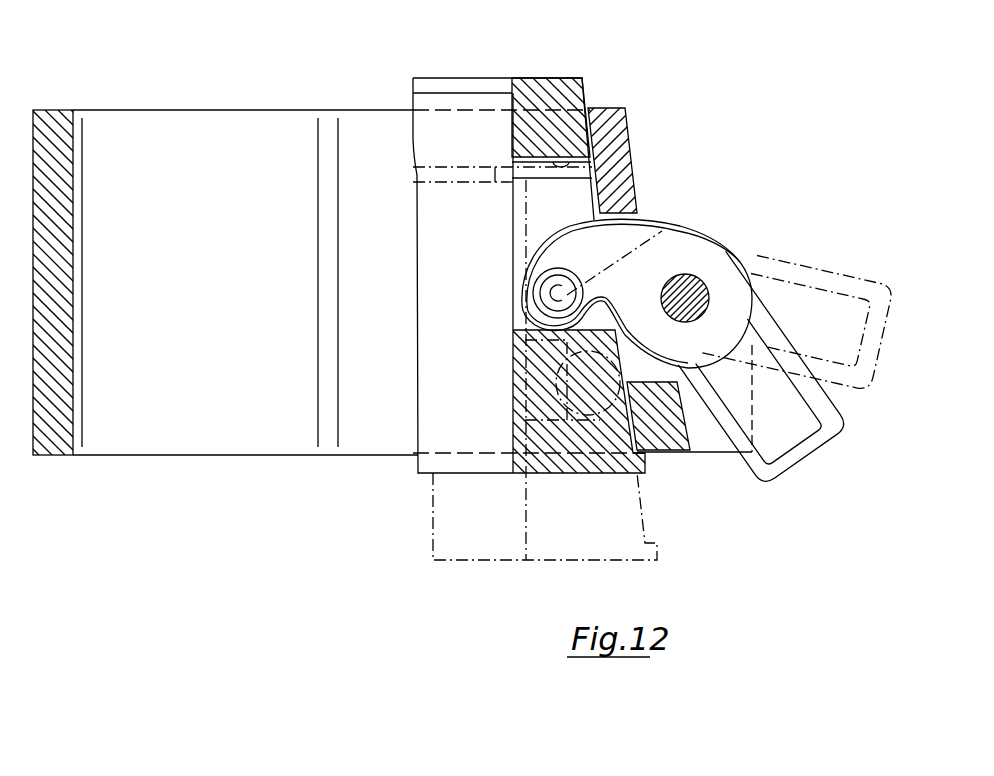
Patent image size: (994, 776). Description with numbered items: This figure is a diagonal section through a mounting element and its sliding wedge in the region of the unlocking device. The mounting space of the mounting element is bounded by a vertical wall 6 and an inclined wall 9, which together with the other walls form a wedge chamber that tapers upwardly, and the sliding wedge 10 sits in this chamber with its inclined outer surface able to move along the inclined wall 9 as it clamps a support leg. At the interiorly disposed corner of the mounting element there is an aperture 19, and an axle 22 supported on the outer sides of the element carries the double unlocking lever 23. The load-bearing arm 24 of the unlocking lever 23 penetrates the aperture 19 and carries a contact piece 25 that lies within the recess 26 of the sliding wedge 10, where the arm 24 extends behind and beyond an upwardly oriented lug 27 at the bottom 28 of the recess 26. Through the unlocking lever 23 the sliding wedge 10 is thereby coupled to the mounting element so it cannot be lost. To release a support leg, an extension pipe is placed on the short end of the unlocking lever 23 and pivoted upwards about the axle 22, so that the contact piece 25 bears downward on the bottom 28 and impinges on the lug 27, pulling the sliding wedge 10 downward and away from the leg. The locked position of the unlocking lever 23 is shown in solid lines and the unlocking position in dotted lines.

The vertical wall 6 is at (193, 137).
The inclined wall 9 is at (362, 133).
The sliding wedge 10 is at (545, 90).
The aperture 19 is at (643, 217).
The axle 22 is at (687, 273).
The unlocking lever 23 is at (727, 250).
The load-bearing arm 24 is at (617, 247).
The contact piece 25 is at (520, 272).
The recess 26 is at (575, 155).
The lug 27 is at (608, 303).
The bottom 28 is at (522, 318).